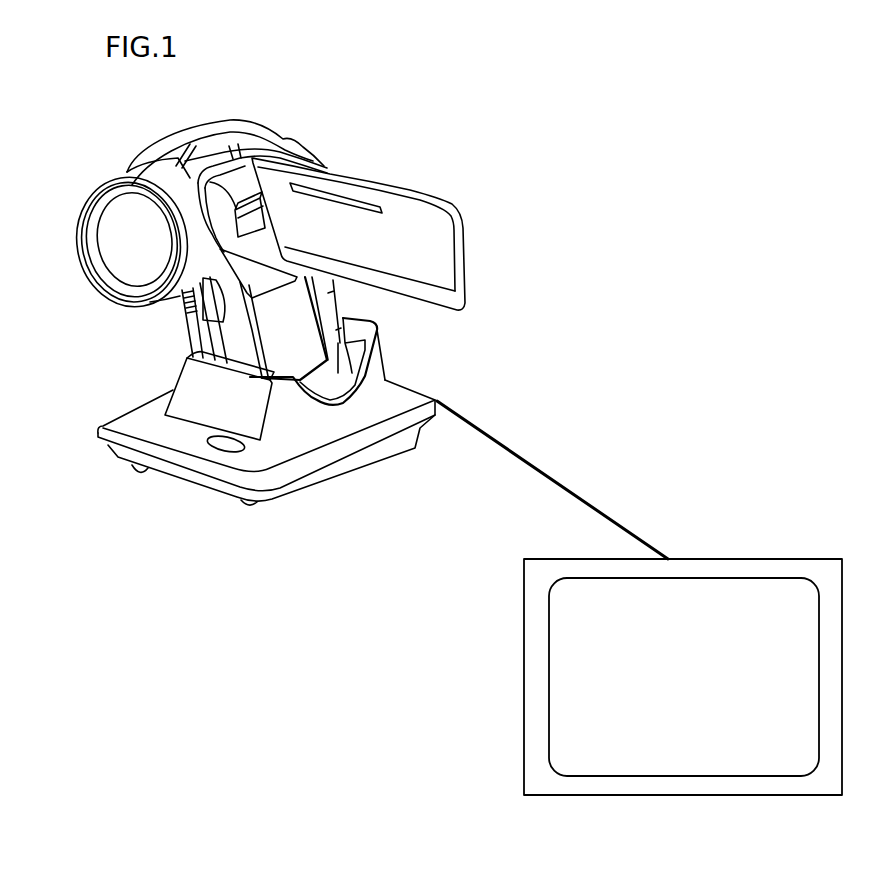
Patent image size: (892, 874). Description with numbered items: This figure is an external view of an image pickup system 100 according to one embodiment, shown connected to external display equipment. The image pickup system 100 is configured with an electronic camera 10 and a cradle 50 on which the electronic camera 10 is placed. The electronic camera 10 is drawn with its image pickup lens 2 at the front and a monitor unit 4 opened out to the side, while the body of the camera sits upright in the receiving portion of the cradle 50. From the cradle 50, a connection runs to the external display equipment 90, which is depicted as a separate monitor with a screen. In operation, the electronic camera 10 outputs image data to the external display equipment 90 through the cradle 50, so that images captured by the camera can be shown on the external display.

The image pickup system 100 is at (519, 238).
The electronic camera 10 is at (288, 106).
The image pickup lens 2 is at (76, 220).
The monitor unit 4 is at (430, 197).
The cradle 50 is at (213, 492).
The external display equipment 90 is at (793, 557).